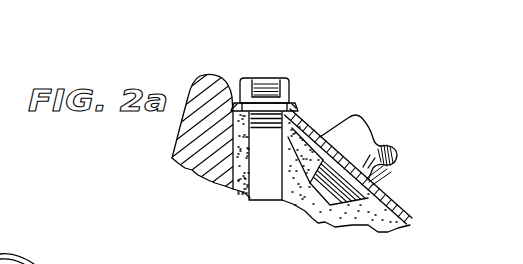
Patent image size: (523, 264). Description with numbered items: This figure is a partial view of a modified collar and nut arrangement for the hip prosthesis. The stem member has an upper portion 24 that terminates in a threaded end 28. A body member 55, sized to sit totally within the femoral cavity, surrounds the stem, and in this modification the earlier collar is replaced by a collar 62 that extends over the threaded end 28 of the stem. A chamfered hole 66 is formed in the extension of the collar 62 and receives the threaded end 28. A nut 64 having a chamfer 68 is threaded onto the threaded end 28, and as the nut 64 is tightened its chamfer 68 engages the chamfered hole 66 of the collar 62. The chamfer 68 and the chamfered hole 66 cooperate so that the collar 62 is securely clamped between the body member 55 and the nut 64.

The upper portion 24 is at (267, 185).
The threaded end 28 is at (340, 117).
The body member 55 is at (350, 226).
The collar 62 is at (382, 205).
The nut 64 is at (288, 92).
The chamfered hole 66 is at (286, 124).
The chamfer 68 is at (258, 95).